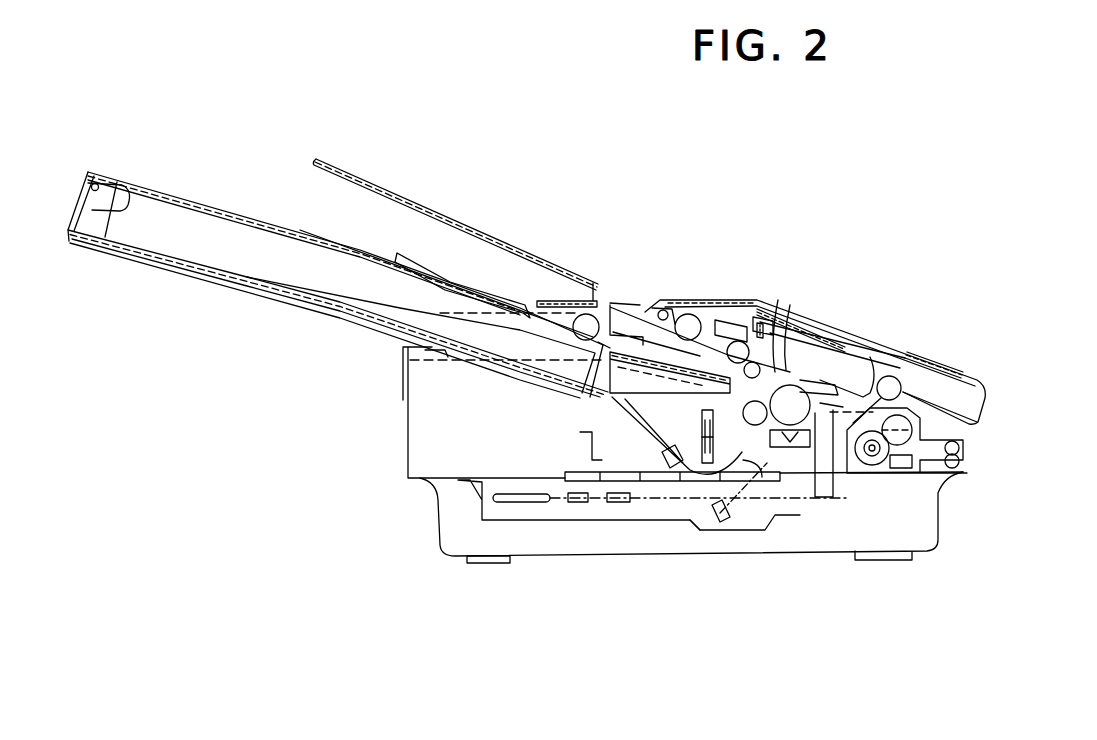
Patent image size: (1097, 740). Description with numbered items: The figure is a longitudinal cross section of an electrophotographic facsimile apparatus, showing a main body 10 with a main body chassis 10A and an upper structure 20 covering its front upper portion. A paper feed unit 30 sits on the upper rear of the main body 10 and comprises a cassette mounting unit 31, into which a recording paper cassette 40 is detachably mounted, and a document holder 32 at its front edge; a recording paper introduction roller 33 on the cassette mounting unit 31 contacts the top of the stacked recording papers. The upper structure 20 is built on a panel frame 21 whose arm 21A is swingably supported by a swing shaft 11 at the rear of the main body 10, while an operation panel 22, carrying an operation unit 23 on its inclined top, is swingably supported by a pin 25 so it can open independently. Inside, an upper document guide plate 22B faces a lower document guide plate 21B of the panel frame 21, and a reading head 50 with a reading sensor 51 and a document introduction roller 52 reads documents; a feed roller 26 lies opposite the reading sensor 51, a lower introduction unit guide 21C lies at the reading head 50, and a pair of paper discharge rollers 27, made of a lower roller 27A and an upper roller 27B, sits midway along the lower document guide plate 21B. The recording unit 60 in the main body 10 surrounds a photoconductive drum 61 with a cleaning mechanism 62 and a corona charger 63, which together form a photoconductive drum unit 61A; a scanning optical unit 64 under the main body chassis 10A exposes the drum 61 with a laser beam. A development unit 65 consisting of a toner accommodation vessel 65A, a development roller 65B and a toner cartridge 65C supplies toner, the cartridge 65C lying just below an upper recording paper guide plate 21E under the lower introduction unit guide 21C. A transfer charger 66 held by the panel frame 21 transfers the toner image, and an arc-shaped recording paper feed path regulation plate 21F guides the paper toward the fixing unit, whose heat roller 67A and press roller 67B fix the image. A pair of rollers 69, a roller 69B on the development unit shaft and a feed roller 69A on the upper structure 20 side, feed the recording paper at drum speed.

The main body 10 is at (390, 431).
The main body chassis 10A is at (500, 478).
The swing shaft 11 is at (433, 362).
The upper structure 20 is at (1095, 296).
The panel frame 21 is at (963, 430).
The arm 21A is at (652, 300).
The lower document guide plate 21B is at (945, 378).
The lower introduction unit guide 21C is at (635, 318).
The upper recording paper guide plate 21E is at (728, 320).
The recording paper feed path regulation plate 21F is at (830, 395).
The operation panel 22 is at (980, 381).
The upper document guide plate 22B is at (860, 362).
The operation unit 23 is at (853, 325).
The pin 25 is at (667, 318).
The feed roller 26 is at (757, 362).
The paper discharge rollers 27 is at (1023, 289).
The lower roller 27A is at (915, 345).
The upper roller 27B is at (920, 320).
The paper feed unit 30 is at (622, 240).
The cassette mounting unit 31 is at (570, 324).
The document holder 32 is at (481, 238).
The recording paper introduction roller 33 is at (587, 287).
The recording paper cassette 40 is at (189, 196).
The reading head 50 is at (786, 222).
The reading sensor 51 is at (745, 326).
The document introduction roller 52 is at (701, 312).
The recording unit 60 is at (979, 632).
The photoconductive drum 61 is at (792, 450).
The photoconductive drum unit 61A is at (845, 598).
The cleaning mechanism 62 is at (819, 500).
The corona charger 63 is at (797, 455).
The scanning optical unit 64 is at (653, 526).
The development unit 65 is at (645, 420).
The toner accommodation vessel 65A is at (580, 432).
The development roller 65B is at (670, 407).
The toner cartridge 65C is at (592, 400).
The transfer charger 66 is at (850, 473).
The heat roller 67A is at (853, 475).
The press roller 67B is at (905, 473).
The pair of rollers 69 is at (851, 302).
The feed roller 69A is at (793, 367).
The roller 69B is at (800, 345).